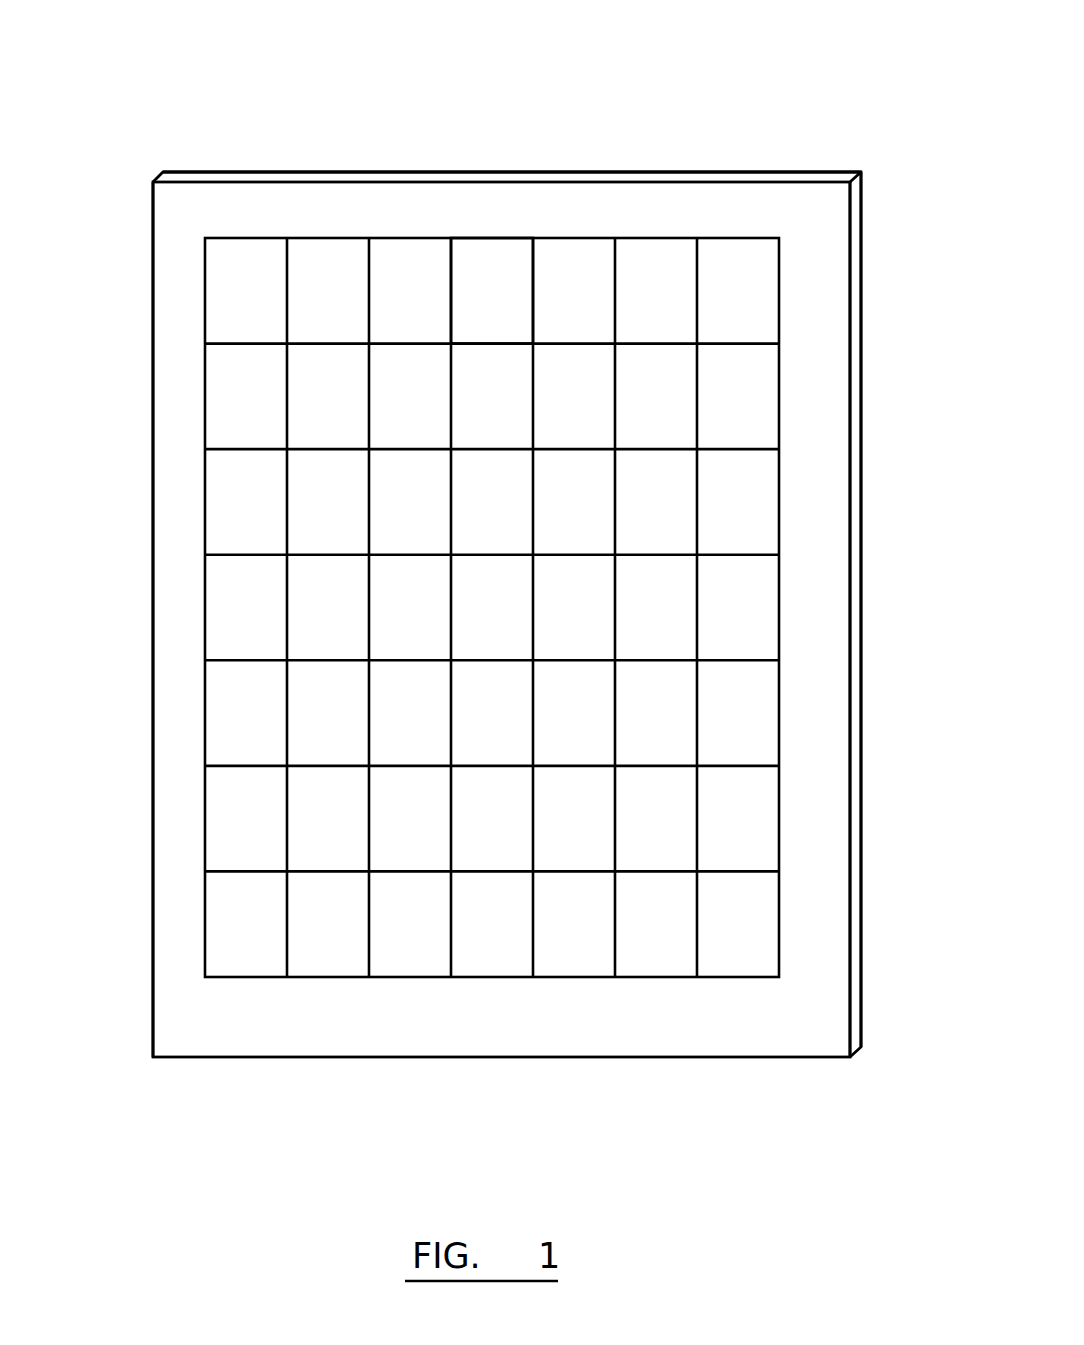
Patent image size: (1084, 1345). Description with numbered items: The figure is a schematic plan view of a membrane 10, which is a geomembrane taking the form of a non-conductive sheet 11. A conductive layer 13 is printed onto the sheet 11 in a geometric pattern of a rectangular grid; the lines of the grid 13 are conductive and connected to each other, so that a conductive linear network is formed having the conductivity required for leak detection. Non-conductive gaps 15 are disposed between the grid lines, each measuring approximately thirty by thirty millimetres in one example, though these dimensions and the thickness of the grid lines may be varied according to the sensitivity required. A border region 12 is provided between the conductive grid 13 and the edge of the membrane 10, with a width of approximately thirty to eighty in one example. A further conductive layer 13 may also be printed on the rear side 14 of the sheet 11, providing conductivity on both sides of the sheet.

The membrane 10 is at (652, 152).
The non-conductive sheet 11 is at (785, 172).
The border region 12 is at (817, 393).
The conductive layer 13 is at (410, 238).
The rear side 14 is at (152, 280).
The non-conductive gaps 15 is at (483, 273).